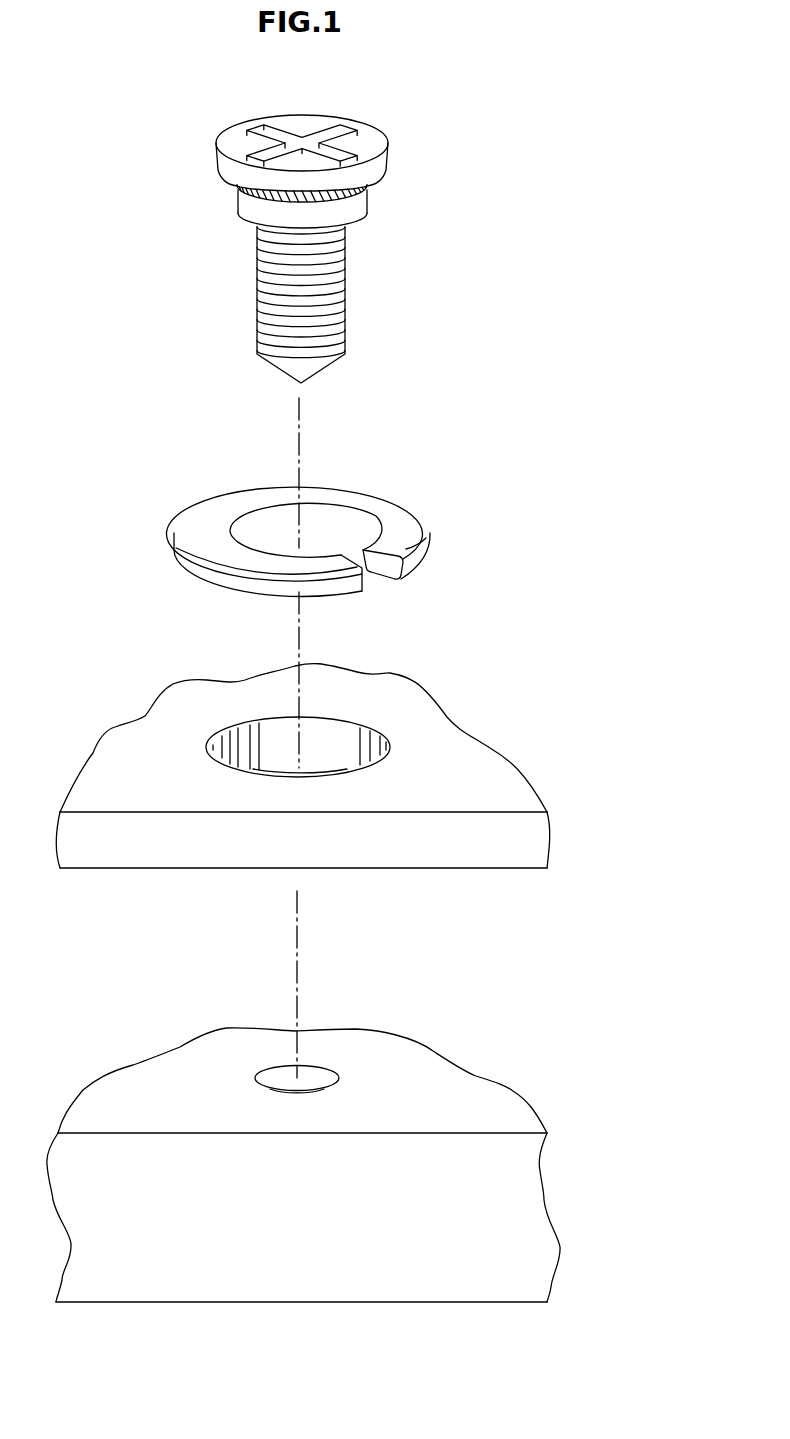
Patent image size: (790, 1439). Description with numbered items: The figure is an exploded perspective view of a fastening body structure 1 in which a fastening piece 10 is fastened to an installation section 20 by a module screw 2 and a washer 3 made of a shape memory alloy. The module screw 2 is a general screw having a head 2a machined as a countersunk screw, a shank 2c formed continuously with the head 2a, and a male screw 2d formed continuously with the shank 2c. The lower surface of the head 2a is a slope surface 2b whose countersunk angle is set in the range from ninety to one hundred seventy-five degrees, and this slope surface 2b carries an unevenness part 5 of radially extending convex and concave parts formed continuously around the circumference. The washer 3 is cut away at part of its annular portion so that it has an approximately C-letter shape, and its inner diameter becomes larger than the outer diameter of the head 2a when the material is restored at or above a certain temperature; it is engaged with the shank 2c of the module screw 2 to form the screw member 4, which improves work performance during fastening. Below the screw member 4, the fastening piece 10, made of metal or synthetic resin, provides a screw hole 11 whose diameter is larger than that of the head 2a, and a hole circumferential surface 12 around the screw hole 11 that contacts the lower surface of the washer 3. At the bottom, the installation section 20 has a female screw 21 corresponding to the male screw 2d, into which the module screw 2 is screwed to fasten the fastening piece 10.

The fastening body structure 1 is at (505, 442).
The module screw 2 is at (220, 257).
The head 2a is at (365, 143).
The slope surface 2b is at (365, 195).
The shank 2c is at (327, 212).
The male screw 2d is at (327, 292).
The washer made of a shape memory alloy 3 is at (182, 495).
The screw member 4 is at (107, 303).
The unevenness part 5 is at (228, 188).
The fastening piece 10 is at (488, 790).
The screw hole 11 is at (337, 740).
The hole circumferential surface 12 is at (407, 743).
The installation section 20 is at (449, 1102).
The female screw 21 is at (305, 1084).